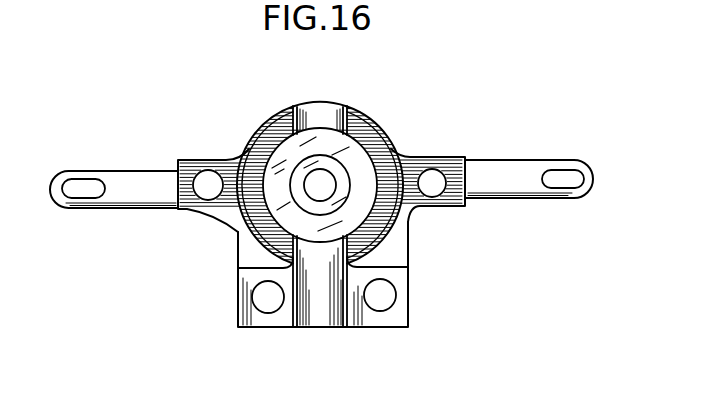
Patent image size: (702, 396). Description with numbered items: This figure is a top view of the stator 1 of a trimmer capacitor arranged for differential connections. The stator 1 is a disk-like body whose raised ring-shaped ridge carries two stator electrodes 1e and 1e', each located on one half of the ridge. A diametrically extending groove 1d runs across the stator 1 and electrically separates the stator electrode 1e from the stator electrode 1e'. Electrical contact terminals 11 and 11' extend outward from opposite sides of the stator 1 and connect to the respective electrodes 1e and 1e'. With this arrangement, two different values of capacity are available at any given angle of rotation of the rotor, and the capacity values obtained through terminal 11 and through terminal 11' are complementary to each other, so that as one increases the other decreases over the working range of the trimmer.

The stator 1 is at (395, 245).
The diametrical groove 1d is at (321, 112).
The stator electrode 1e is at (217, 162).
The stator electrode 1e' is at (424, 155).
The electrical contact terminal 11 is at (114, 167).
The electrical contact terminal 11' is at (529, 157).